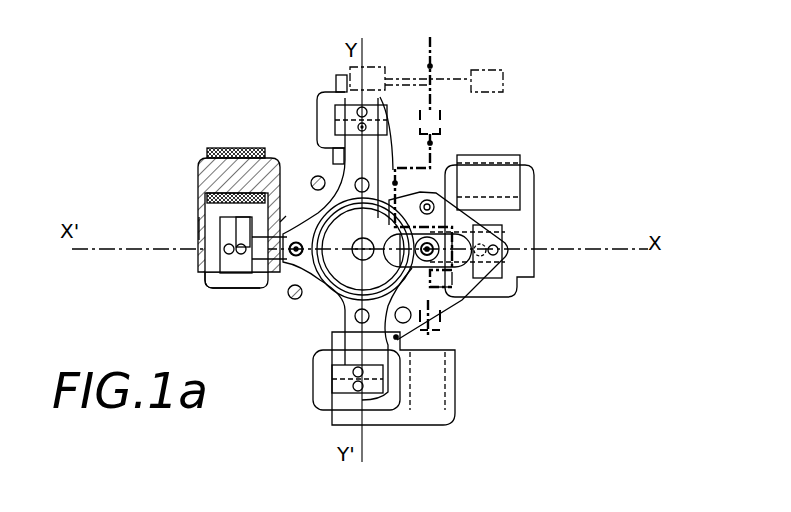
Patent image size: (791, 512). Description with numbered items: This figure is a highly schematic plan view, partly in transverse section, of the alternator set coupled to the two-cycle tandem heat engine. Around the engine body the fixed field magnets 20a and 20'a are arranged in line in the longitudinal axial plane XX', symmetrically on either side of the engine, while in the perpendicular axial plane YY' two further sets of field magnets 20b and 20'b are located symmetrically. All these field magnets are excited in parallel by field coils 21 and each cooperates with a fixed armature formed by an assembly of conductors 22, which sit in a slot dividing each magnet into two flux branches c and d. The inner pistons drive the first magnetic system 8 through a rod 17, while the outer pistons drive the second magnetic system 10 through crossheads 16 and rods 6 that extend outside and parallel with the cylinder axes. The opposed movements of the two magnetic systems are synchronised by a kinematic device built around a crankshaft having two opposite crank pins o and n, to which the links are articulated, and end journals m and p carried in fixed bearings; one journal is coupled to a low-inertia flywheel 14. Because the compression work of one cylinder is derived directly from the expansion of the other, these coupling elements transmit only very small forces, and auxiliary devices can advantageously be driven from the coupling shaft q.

The rods 6 is at (312, 189).
The first magnetic system 8 is at (242, 265).
The second magnetic system 10 is at (229, 265).
The low-inertia flywheel 14 is at (494, 81).
The crossheads 16 is at (396, 337).
The rod 17 is at (290, 282).
The fixed field magnets 20a is at (524, 228).
The field magnets 20b is at (432, 418).
The fixed field magnets 20'a is at (204, 223).
The field magnets 20'b is at (332, 110).
The field coils 21 is at (243, 150).
The conductors 22 is at (212, 283).
The flux branch c is at (192, 231).
The flux branch d is at (289, 217).
The end journal m is at (432, 310).
The crank pin n is at (460, 290).
The crank pin o is at (395, 183).
The end journal p is at (430, 143).
The coupling shaft q is at (430, 66).